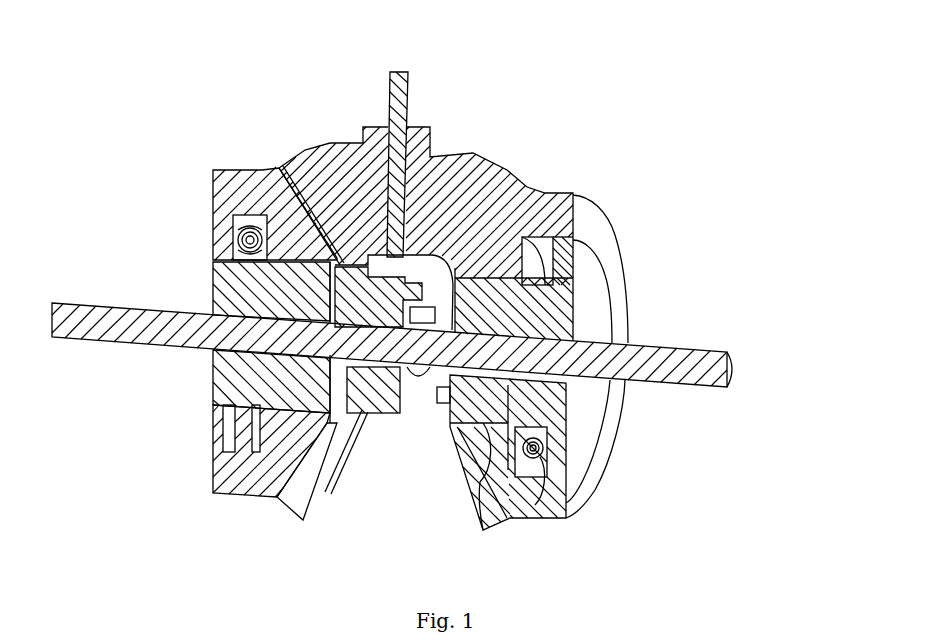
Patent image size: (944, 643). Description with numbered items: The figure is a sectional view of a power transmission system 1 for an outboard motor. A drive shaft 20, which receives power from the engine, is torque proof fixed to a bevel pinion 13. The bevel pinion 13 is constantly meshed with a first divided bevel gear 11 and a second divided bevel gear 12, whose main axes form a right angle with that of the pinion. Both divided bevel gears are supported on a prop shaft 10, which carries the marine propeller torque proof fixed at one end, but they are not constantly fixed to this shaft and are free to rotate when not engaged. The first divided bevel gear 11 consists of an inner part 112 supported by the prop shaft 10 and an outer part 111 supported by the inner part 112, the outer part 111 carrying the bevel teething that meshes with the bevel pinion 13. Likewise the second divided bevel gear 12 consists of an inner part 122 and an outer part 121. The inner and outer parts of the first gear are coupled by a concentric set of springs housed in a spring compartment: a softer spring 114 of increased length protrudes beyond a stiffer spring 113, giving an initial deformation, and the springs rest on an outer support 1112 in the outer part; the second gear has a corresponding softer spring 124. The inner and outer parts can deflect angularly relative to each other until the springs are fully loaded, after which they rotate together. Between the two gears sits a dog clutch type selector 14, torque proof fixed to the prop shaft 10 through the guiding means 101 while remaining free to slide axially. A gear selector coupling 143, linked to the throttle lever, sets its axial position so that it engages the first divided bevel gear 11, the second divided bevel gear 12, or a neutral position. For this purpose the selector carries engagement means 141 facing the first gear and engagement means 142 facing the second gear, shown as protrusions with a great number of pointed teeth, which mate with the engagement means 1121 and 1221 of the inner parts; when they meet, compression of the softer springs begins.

The power transmission system 1 is at (438, 296).
The prop shaft 10 is at (720, 365).
The first divided bevel gear 11 is at (198, 280).
The outer part 111 is at (191, 436).
The outer support 1112 is at (242, 422).
The inner part 112 is at (222, 243).
The engagement means 1121 is at (330, 373).
The stiffer spring 113 is at (222, 214).
The softer spring 114 is at (233, 243).
The second divided bevel gear 12 is at (515, 305).
The outer part 121 is at (620, 319).
The inner part 122 is at (570, 472).
The engagement means 1221 is at (476, 437).
The softer spring 124 is at (540, 457).
The guiding means 101 is at (523, 470).
The bevel pinion 13 is at (466, 103).
The dog clutch type selector 14 is at (359, 449).
The engagement means 141 is at (332, 418).
The engagement means 142 is at (447, 423).
The gear selector coupling 143 is at (367, 413).
The drive shaft 20 is at (393, 98).